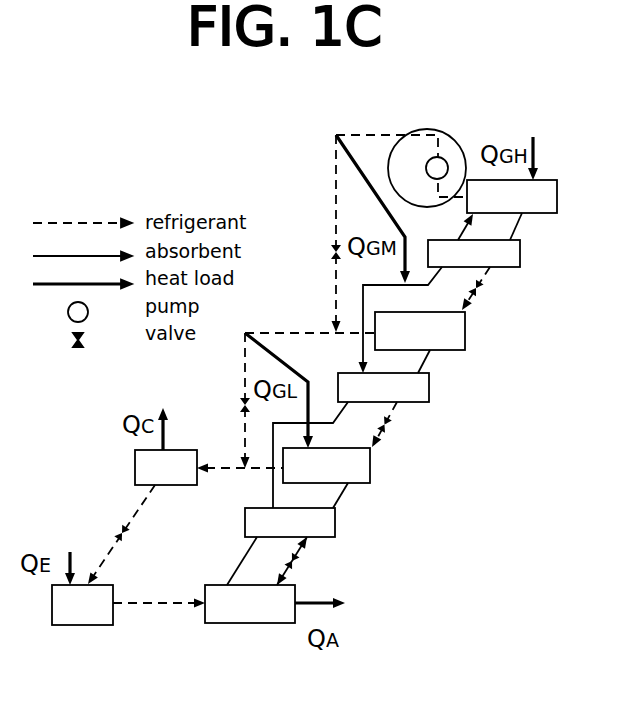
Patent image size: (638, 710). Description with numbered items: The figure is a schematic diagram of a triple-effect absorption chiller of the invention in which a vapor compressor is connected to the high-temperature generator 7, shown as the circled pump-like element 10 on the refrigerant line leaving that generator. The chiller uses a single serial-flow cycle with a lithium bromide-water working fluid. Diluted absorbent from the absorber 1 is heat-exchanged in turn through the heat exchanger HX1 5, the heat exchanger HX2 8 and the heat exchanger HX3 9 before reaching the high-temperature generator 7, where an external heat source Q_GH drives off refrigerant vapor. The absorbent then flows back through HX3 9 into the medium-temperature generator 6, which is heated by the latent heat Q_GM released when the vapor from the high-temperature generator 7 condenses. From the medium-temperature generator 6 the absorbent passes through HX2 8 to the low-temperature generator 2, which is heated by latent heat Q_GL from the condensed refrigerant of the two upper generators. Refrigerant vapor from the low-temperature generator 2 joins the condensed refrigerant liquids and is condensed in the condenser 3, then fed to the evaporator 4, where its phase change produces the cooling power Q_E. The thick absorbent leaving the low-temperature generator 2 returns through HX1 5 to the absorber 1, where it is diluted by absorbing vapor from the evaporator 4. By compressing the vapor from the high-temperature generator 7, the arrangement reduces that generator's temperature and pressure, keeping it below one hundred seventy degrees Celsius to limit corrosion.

The absorber 1 is at (250, 604).
The low-temperature generator 2 is at (326, 465).
The condenser 3 is at (166, 467).
The evaporator 4 is at (82, 605).
The heat exchanger HX1 5 is at (290, 523).
The medium-temperature generator 6 is at (420, 331).
The high-temperature generator 7 is at (512, 196).
The heat exchanger HX2 8 is at (383, 388).
The heat exchanger HX3 9 is at (474, 254).
The solution pump 10 is at (427, 168).